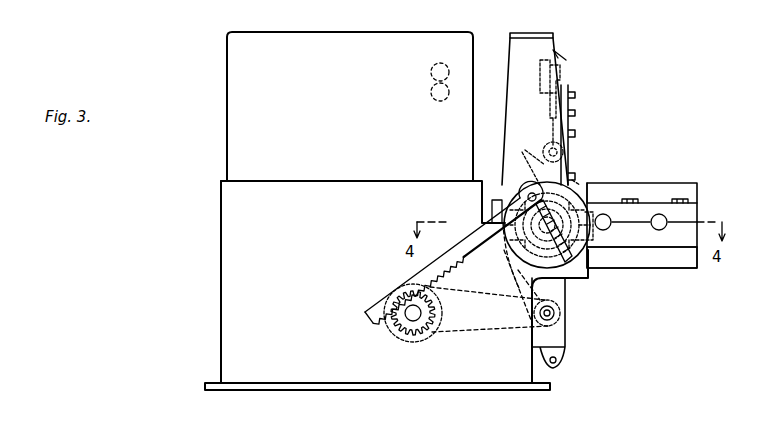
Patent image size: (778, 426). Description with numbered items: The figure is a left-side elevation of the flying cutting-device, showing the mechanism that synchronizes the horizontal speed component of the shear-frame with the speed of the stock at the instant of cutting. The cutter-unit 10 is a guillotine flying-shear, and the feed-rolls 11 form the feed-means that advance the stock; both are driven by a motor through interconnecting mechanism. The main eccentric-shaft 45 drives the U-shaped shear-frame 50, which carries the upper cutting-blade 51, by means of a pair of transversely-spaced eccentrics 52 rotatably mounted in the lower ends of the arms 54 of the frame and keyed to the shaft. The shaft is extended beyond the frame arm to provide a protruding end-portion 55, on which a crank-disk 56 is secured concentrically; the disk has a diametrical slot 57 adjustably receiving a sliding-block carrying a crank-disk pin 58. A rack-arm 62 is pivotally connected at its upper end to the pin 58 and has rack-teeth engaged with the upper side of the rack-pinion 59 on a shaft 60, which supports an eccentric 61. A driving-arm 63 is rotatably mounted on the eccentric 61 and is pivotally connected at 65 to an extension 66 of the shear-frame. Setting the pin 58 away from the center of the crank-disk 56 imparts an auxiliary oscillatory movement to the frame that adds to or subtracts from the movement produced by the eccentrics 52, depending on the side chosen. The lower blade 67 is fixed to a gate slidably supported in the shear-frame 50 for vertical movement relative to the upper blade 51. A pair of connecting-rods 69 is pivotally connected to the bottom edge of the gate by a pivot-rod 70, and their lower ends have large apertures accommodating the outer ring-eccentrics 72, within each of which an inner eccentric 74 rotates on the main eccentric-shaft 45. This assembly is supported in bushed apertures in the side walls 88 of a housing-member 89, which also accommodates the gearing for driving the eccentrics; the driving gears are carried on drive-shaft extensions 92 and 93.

The cutter-unit 10 is at (569, 117).
The feed-rolls 11 is at (434, 63).
The main eccentric-shaft 45 is at (598, 232).
The shear-frame 50 is at (536, 33).
The upper cutting-blade 51 is at (540, 62).
The eccentrics 52 is at (516, 272).
The arms 54 is at (512, 123).
The end-portion 55 is at (505, 227).
The crank-disk 56 is at (590, 185).
The diametrical slot 57 is at (547, 225).
The crank-disk pin 58 is at (527, 197).
The rack-pinion 59 is at (415, 292).
The shaft 60 is at (415, 325).
The eccentric 61 is at (442, 299).
The rack-arm 62 is at (462, 250).
The driving-arm 63 is at (478, 330).
The pivotal connection 65 is at (555, 316).
The extension 66 is at (566, 355).
The lower blade 67 is at (548, 98).
The connecting-rods 69 is at (528, 160).
The pivot-rod 70 is at (548, 143).
The ring-eccentrics 72 is at (578, 180).
The inner eccentric 74 is at (513, 255).
The side walls 88 is at (677, 257).
The housing-member 89 is at (651, 269).
The drive-shaft extension 92 is at (607, 214).
The drive-shaft extension 93 is at (663, 214).